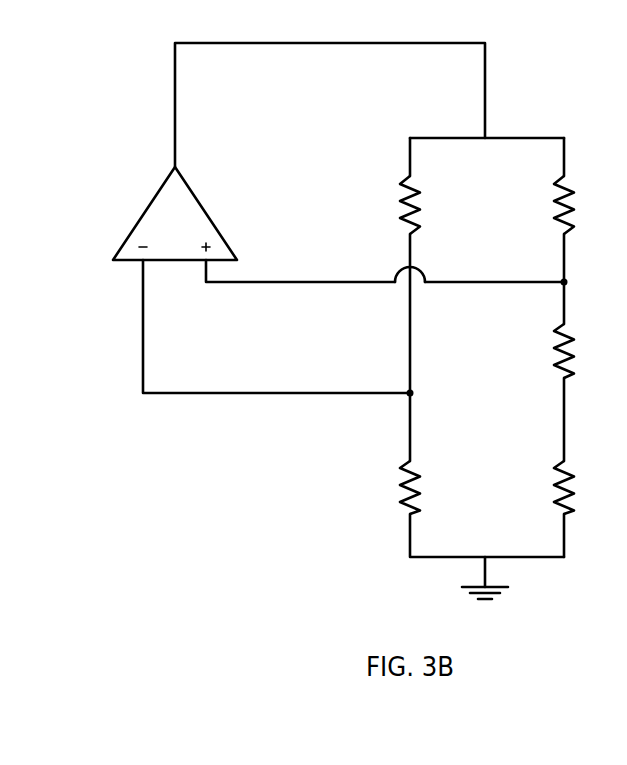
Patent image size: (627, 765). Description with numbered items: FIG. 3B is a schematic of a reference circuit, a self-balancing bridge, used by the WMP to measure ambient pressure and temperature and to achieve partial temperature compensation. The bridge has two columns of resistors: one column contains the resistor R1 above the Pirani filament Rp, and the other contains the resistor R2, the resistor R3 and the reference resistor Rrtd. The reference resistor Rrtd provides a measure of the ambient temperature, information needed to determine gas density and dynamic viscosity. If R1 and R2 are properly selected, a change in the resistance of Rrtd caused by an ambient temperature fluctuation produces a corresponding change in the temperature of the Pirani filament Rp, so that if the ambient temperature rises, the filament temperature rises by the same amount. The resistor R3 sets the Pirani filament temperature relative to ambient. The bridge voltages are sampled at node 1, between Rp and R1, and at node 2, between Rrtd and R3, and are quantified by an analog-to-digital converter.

The first node 1 is at (421, 394).
The second node 2 is at (575, 283).
The resistor R1 is at (399, 205).
The resistor R2 is at (553, 205).
The resistor R3 is at (553, 351).
The Pirani filament Rp is at (399, 487).
The reference resistor Rrtd is at (553, 487).